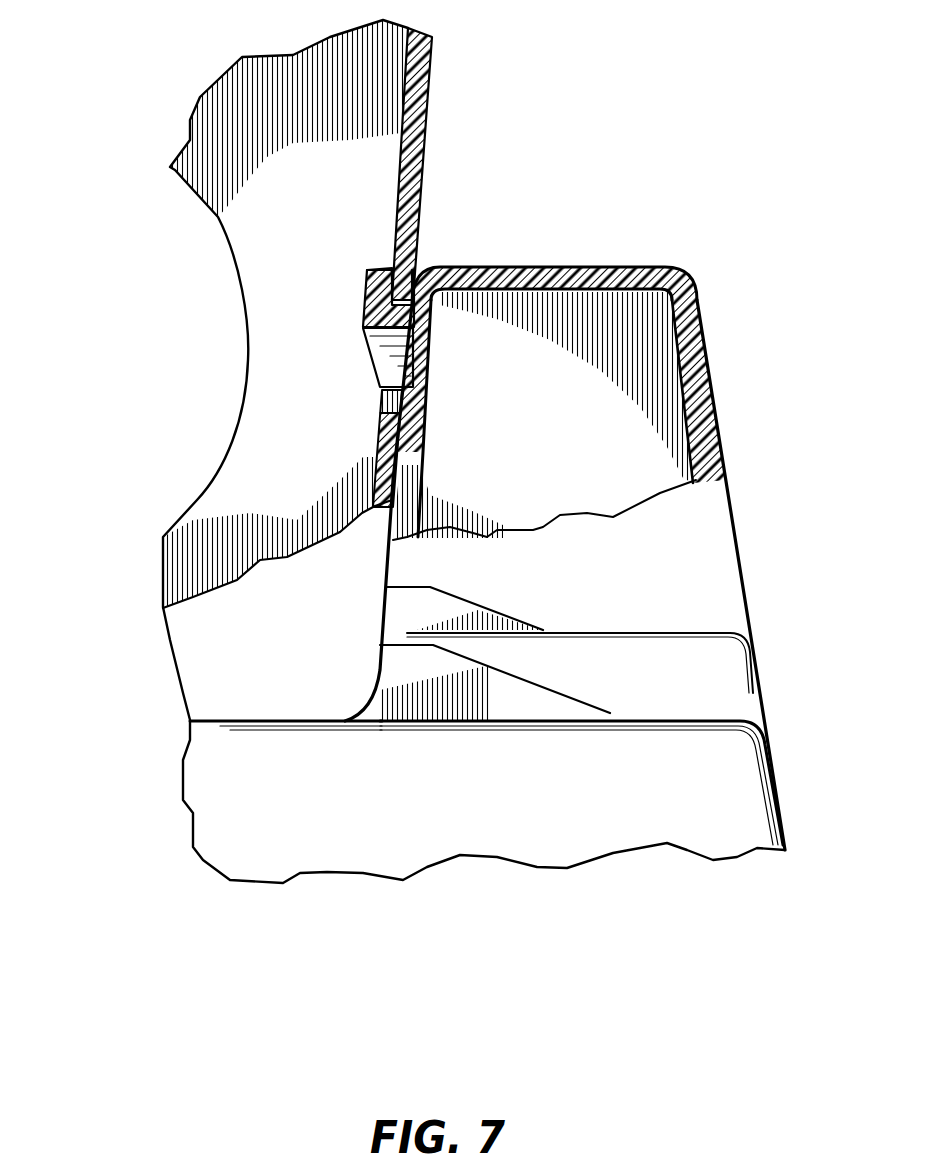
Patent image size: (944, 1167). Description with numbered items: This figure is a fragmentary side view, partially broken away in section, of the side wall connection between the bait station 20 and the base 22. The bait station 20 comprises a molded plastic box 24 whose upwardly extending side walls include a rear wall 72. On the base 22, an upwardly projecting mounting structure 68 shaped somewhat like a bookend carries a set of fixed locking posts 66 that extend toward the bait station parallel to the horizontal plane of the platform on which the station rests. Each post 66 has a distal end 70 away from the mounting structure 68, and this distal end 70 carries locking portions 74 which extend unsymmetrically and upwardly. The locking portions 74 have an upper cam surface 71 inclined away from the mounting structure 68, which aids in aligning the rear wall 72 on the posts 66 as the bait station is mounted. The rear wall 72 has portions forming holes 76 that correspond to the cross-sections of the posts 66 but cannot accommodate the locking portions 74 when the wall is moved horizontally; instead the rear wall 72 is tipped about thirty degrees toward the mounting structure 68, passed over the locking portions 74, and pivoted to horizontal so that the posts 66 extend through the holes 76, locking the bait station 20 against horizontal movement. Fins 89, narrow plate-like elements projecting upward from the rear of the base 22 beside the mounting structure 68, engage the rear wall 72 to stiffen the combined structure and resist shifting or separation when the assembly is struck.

The bait station 20 is at (130, 88).
The base 22 is at (738, 347).
The box 24 is at (255, 723).
The posts 66 is at (367, 353).
The mounting structure 68 is at (592, 267).
The distal end 70 is at (363, 307).
The upper cam surface 71 is at (395, 277).
The rear wall 72 is at (428, 115).
The locking portions 74 is at (368, 280).
The holes 76 is at (377, 400).
The fins 89 is at (457, 595).